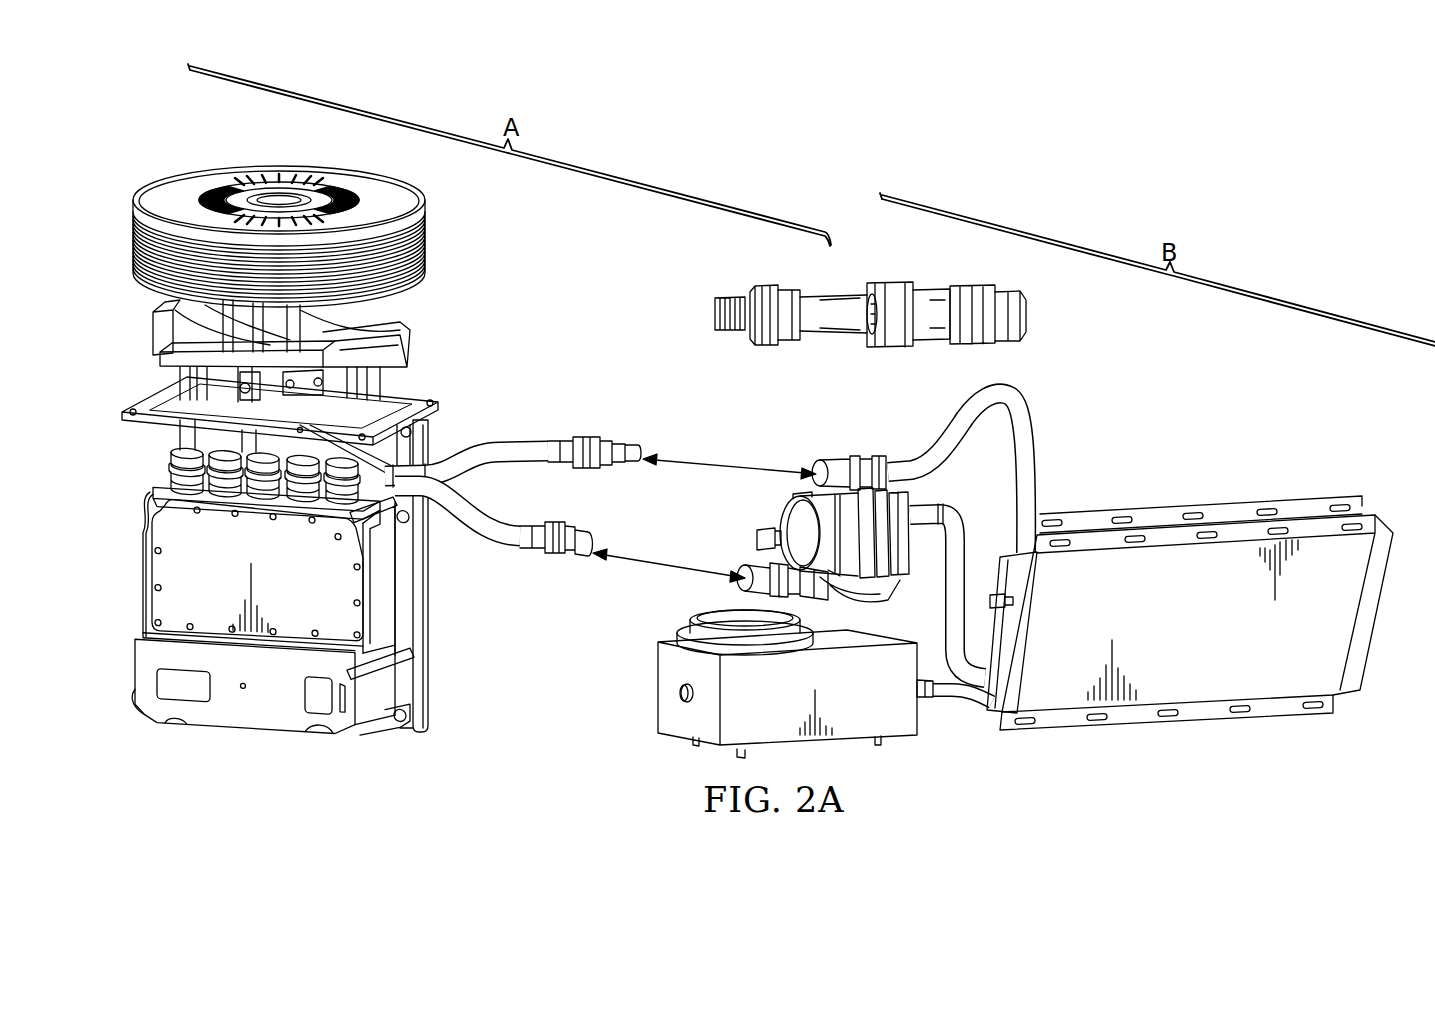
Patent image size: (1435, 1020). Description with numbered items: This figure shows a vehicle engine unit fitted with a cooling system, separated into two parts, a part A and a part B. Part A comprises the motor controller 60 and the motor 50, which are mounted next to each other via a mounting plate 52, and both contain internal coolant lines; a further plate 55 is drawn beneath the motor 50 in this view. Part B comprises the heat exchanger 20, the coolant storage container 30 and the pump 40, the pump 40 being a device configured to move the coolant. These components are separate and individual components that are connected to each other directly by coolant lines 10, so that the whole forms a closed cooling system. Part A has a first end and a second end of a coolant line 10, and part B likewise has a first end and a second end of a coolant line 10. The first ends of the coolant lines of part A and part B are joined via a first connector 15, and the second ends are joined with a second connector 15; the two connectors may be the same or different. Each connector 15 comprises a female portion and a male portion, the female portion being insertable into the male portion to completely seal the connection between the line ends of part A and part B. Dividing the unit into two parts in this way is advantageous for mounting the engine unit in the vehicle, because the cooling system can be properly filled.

The coolant line 10 is at (497, 445).
The connector 15 is at (934, 290).
The heat exchanger 20 is at (1198, 725).
The coolant storage container 30 is at (656, 706).
The pump 40 is at (946, 491).
The motor 50 is at (190, 170).
The mounting plate 52 is at (430, 672).
The mounting plate 55 is at (142, 406).
The motor controller 60 is at (142, 582).